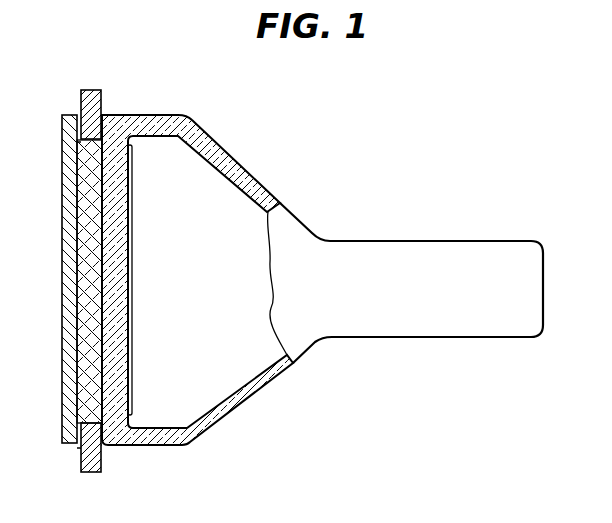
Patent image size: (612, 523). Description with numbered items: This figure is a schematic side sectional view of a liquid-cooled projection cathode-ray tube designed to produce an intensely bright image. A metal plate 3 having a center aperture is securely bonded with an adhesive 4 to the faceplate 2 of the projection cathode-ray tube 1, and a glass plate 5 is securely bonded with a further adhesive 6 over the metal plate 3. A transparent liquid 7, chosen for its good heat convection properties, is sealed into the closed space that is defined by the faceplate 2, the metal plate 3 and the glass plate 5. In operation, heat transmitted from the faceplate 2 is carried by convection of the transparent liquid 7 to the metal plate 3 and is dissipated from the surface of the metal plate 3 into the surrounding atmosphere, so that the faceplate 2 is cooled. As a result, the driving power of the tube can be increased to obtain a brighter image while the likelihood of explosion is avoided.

The projection cathode-ray tube 1 is at (405, 240).
The faceplate 2 is at (88, 287).
The metal plate 3 is at (101, 96).
The adhesive 4 is at (106, 117).
The glass plate 5 is at (62, 122).
The adhesive 6 is at (79, 115).
The transparent liquid 7 is at (78, 198).